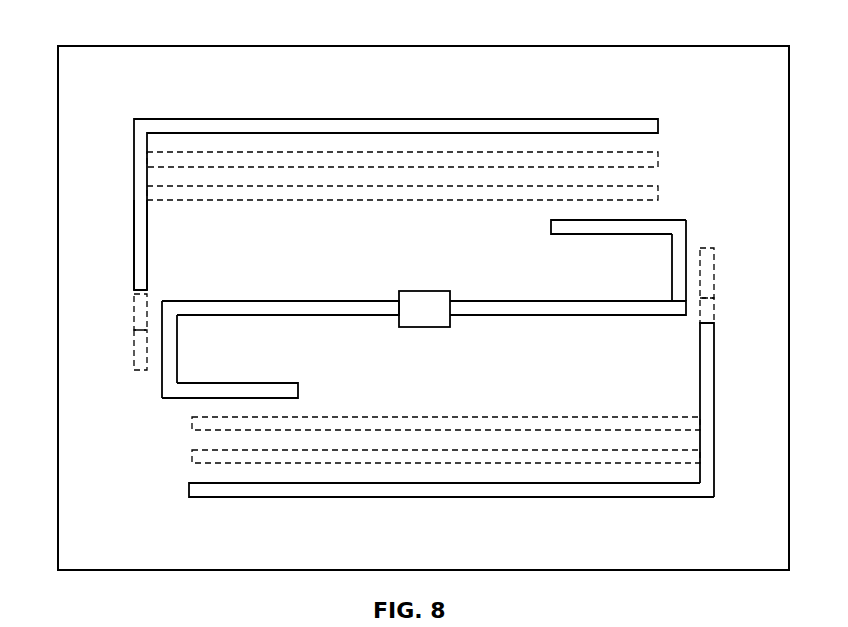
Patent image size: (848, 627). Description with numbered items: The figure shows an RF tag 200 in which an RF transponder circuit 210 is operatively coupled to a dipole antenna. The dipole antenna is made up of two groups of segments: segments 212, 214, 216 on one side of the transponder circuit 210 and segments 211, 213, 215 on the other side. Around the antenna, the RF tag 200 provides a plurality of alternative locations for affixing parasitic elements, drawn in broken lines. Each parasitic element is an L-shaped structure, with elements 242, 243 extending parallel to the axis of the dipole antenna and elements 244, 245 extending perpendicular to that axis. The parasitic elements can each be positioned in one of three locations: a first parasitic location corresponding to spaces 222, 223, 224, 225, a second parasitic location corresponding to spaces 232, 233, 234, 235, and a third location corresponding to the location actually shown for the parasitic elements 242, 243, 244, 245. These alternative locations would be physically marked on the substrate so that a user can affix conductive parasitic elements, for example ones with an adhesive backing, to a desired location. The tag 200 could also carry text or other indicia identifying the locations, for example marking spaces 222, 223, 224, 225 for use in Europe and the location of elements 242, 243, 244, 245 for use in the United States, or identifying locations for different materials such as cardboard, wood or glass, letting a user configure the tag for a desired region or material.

The RF tag 200 is at (127, 37).
The RF transponder circuit 210 is at (425, 300).
The dipole antenna segment 211 is at (239, 306).
The dipole antenna segment 212 is at (528, 305).
The dipole antenna segment 213 is at (172, 350).
The dipole antenna segment 214 is at (676, 268).
The dipole antenna segment 215 is at (235, 392).
The dipole antenna segment 216 is at (575, 233).
The space 222 is at (192, 422).
The space 223 is at (651, 193).
The space 224 is at (708, 268).
The space 225 is at (140, 349).
The space 232 is at (192, 457).
The space 233 is at (651, 161).
The space 234 is at (708, 306).
The space 235 is at (140, 308).
The parasitic element 242 is at (424, 490).
The parasitic element 243 is at (426, 126).
The parasitic element 244 is at (708, 440).
The parasitic element 245 is at (140, 211).